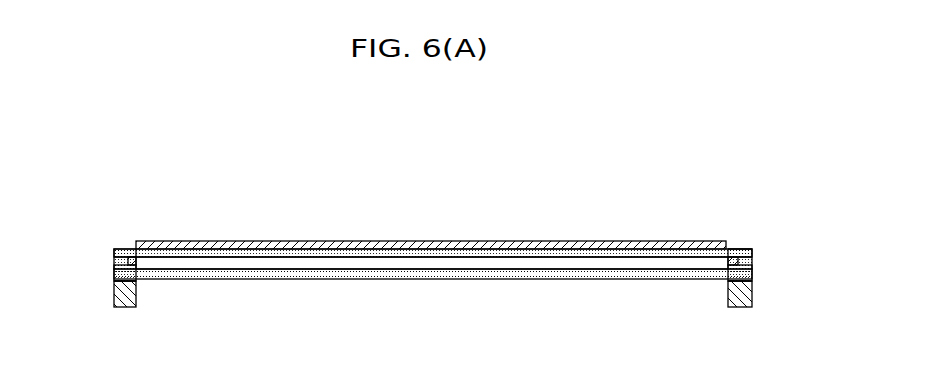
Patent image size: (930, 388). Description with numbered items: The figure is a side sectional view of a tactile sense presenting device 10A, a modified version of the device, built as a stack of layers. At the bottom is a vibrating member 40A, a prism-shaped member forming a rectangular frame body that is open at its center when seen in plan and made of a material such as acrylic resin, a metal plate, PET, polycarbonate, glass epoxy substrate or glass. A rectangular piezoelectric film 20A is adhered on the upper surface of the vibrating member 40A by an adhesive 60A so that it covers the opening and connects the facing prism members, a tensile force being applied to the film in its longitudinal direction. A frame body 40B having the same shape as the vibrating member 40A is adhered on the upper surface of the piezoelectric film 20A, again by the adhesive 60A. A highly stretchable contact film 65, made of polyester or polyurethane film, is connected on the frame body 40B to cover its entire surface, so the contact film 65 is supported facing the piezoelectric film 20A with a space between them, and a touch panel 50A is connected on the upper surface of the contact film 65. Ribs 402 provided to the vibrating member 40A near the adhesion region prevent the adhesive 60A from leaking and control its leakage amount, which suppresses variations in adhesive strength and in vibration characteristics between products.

The tactile sense presenting device 10A is at (181, 200).
The touch panel 50A is at (445, 241).
The frame body 40B is at (115, 258).
The contact film 65 is at (737, 250).
The ribs 402 is at (133, 266).
The adhesive 60A is at (115, 266).
The piezoelectric film 20A is at (447, 280).
The vibrating member 40A is at (115, 297).